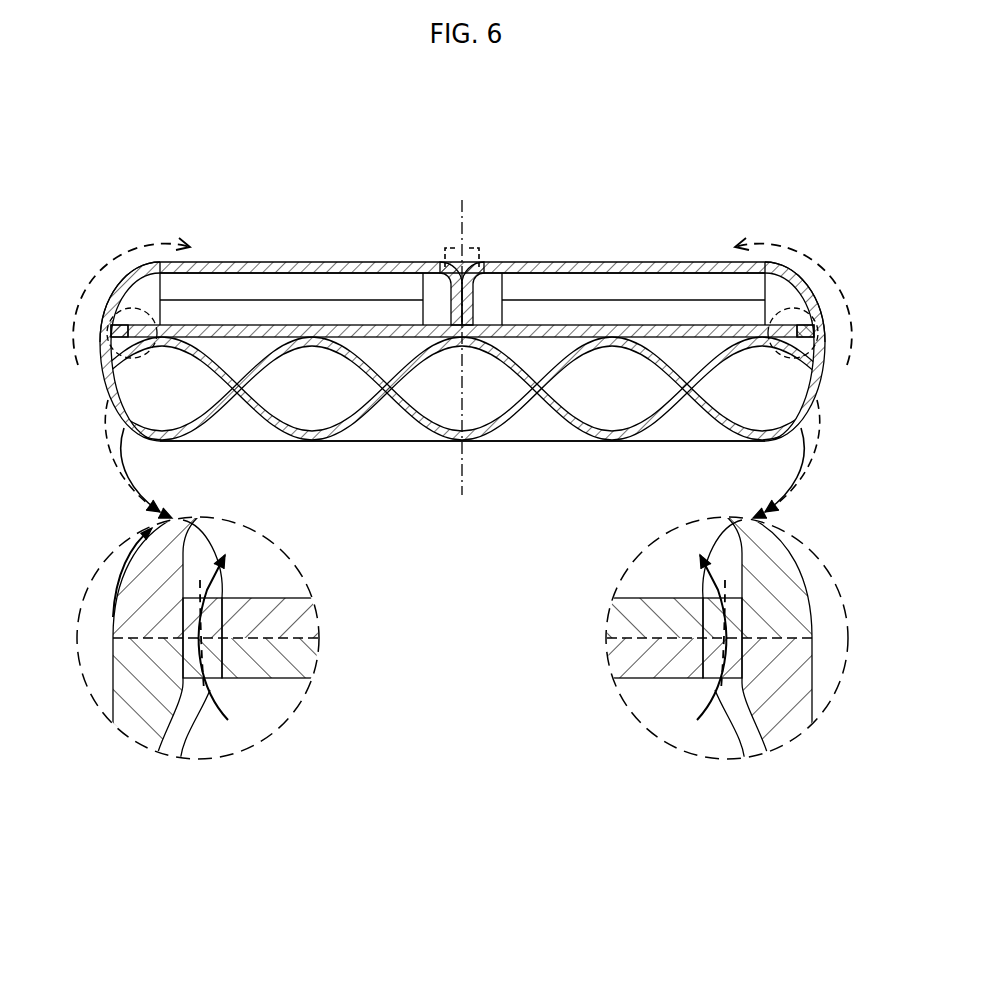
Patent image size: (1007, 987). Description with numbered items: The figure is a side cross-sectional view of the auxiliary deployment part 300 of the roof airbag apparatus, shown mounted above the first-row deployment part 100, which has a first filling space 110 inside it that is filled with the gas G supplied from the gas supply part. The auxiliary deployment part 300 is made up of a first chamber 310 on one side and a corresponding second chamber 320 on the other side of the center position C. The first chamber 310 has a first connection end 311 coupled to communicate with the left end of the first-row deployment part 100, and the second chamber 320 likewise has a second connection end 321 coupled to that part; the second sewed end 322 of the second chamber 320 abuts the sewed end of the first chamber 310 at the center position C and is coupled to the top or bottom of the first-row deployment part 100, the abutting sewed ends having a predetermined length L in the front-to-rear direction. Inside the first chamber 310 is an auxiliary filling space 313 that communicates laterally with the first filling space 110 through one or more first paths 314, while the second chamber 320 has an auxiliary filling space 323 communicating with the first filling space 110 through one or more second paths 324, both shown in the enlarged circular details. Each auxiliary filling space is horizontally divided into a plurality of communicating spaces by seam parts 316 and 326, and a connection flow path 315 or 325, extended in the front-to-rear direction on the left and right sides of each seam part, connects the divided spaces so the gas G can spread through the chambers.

The first-row deployment part 100 is at (118, 428).
The first filling space 110 is at (331, 394).
The auxiliary deployment part 300 is at (540, 262).
The first chamber 310 is at (604, 267).
The first connection end 311 is at (828, 300).
The auxiliary filling space 313 is at (649, 280).
The first path 314 is at (806, 590).
The connection flow path 315 is at (785, 325).
The seam part 316 is at (690, 300).
The second chamber 320 is at (250, 267).
The second connection end 321 is at (94, 268).
The second sewed end 322 is at (447, 262).
The auxiliary filling space 323 is at (307, 268).
The second path 324 is at (122, 590).
The connection flow path 325 is at (139, 325).
The seam part 326 is at (371, 298).
The length of connecting portion L is at (472, 250).
The center position C is at (462, 495).
The gas G is at (198, 712).